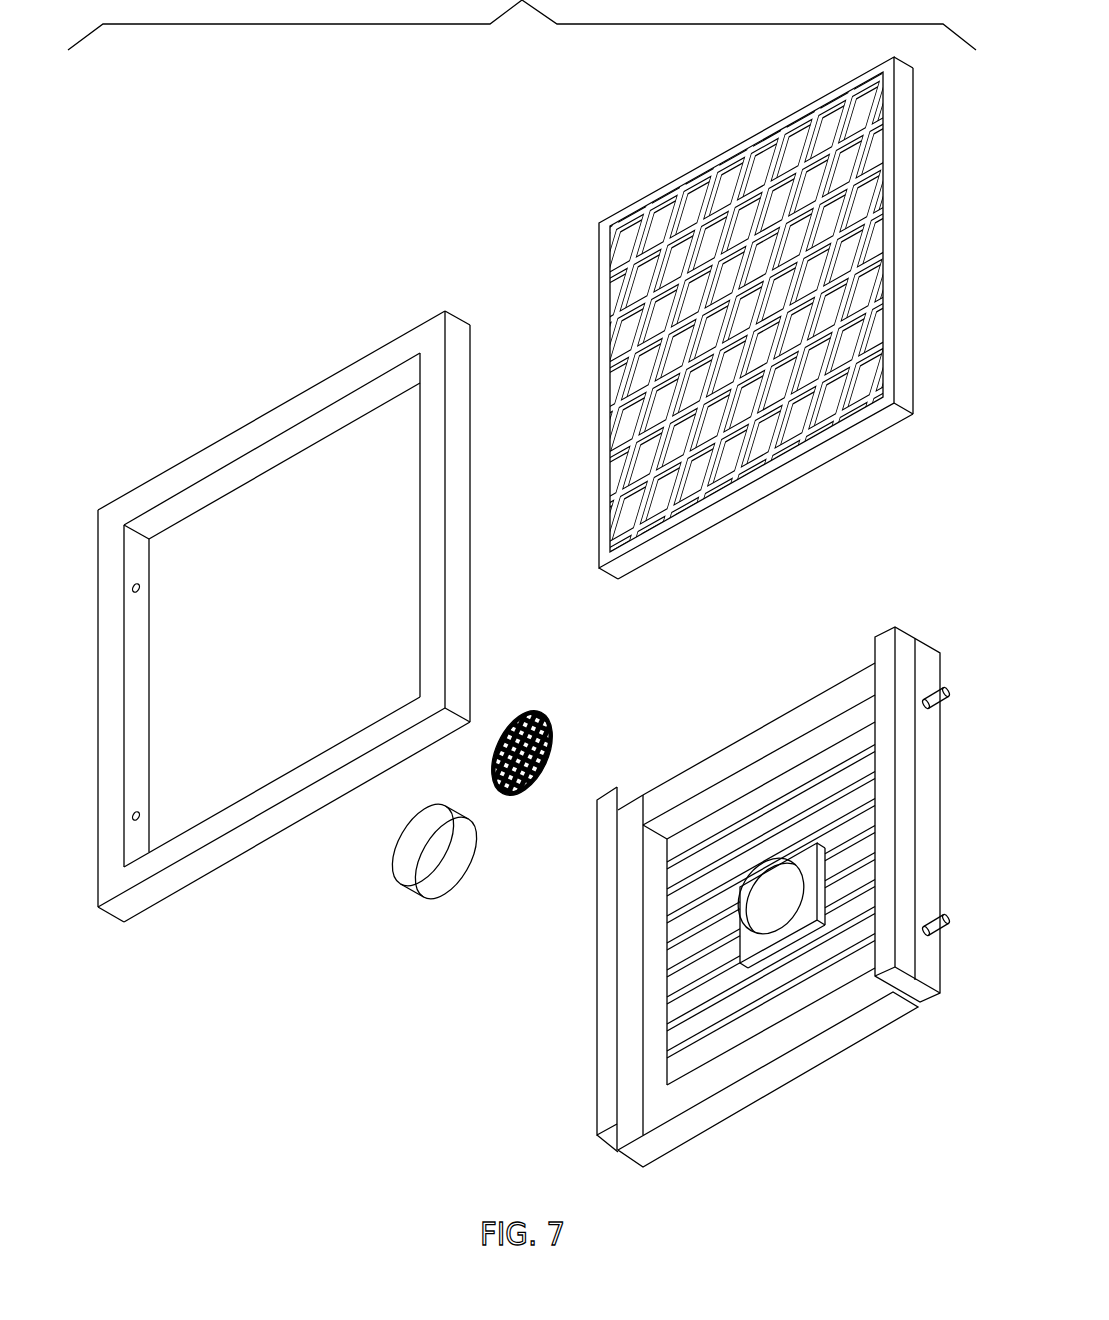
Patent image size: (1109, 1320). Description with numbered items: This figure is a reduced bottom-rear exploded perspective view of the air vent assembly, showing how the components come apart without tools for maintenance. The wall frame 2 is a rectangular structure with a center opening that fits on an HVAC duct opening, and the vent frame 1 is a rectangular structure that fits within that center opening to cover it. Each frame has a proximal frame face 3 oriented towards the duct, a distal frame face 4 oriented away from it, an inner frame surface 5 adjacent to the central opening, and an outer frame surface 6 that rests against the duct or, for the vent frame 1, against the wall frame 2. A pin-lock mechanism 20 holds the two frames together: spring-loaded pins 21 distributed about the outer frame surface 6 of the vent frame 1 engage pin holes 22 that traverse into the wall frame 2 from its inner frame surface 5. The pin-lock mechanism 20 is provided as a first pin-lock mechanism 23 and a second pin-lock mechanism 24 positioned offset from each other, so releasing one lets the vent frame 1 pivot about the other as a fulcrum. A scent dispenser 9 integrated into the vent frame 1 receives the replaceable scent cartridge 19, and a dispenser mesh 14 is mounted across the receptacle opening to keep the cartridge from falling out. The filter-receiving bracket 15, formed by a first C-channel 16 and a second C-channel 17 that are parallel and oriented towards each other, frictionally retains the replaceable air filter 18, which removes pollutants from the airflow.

The vent frame 1 is at (736, 750).
The wall frame 2 is at (413, 279).
The proximal frame face 3 is at (430, 502).
The distal frame face 4 is at (475, 544).
The inner frame surface 5 is at (135, 665).
The outer frame surface 6 is at (456, 470).
The scent dispenser 9 is at (771, 939).
The dispenser mesh 14 is at (527, 712).
The filter-receiving bracket 15 is at (722, 888).
The first C-channel 16 is at (880, 652).
The second C-channel 17 is at (600, 1010).
The replaceable air filter 18 is at (906, 180).
The replaceable scent cartridge 19 is at (432, 882).
The pin-lock mechanism 20 is at (559, 818).
The spring-loaded pins 21 is at (947, 690).
The pin holes 22 is at (203, 702).
The first pin-lock mechanism 23 is at (140, 592).
The second pin-lock mechanism 24 is at (140, 815).